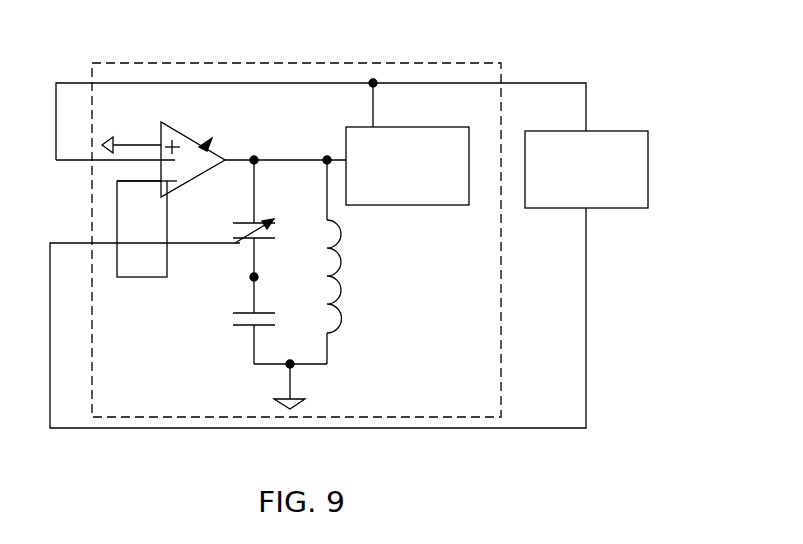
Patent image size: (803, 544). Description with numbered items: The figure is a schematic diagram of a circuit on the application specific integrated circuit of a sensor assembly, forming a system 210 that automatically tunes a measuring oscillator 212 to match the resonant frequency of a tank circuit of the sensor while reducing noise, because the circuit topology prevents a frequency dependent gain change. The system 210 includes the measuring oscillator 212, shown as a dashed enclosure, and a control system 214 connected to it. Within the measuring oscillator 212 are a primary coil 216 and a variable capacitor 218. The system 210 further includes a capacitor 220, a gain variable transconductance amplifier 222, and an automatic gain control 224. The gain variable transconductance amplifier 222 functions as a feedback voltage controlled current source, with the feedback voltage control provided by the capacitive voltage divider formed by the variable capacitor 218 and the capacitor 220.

The system 210 is at (593, 60).
The measuring oscillator 212 is at (402, 63).
The control system 214 is at (635, 131).
The primary coil 216 is at (343, 262).
The variable capacitor 218 is at (237, 223).
The capacitor 220 is at (246, 325).
The gain variable transconductance amplifier (gvOTA) 222 is at (170, 122).
The automatic gain control 224 is at (417, 127).